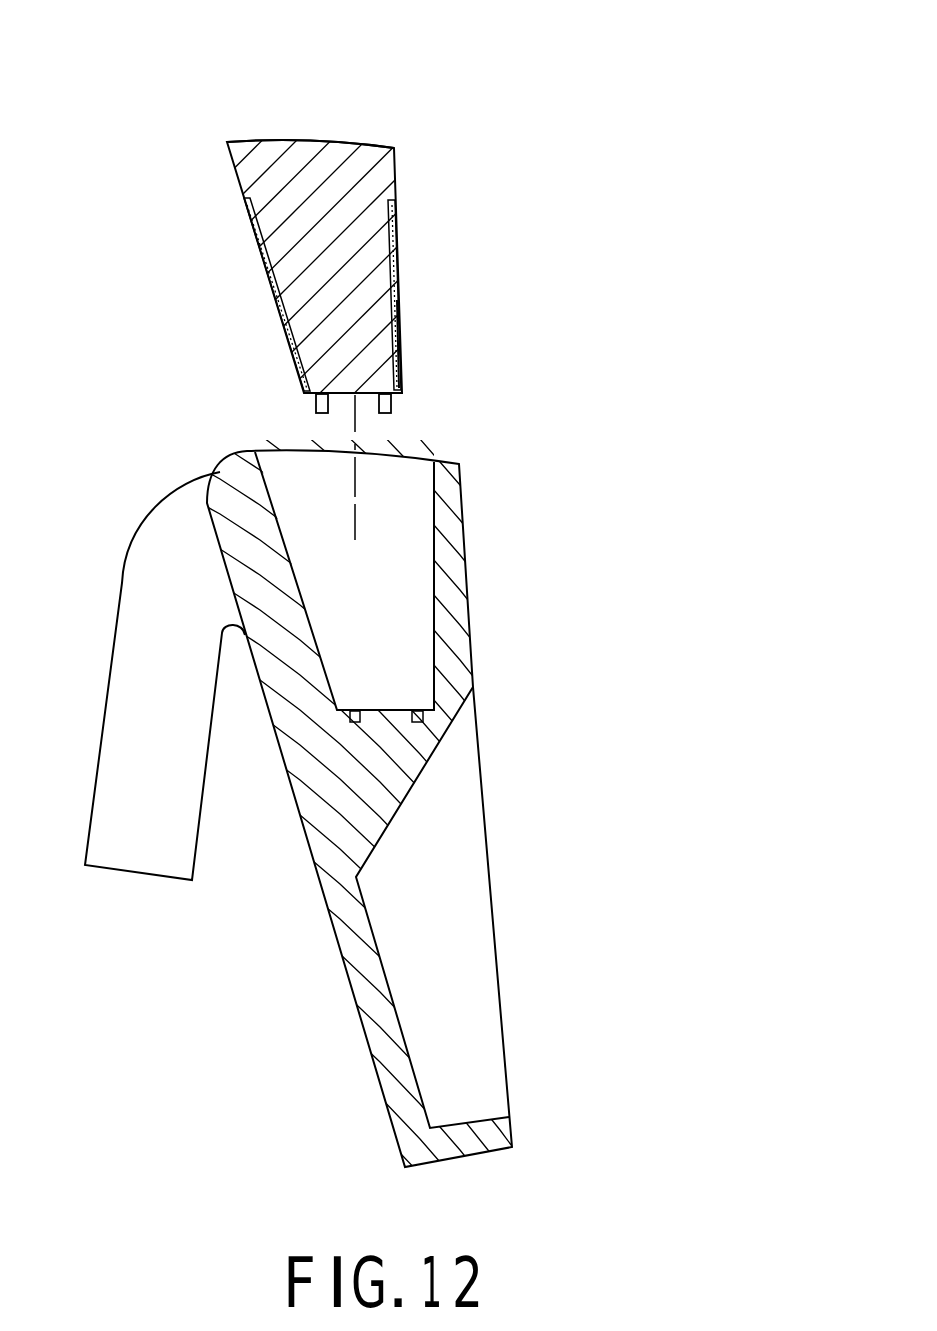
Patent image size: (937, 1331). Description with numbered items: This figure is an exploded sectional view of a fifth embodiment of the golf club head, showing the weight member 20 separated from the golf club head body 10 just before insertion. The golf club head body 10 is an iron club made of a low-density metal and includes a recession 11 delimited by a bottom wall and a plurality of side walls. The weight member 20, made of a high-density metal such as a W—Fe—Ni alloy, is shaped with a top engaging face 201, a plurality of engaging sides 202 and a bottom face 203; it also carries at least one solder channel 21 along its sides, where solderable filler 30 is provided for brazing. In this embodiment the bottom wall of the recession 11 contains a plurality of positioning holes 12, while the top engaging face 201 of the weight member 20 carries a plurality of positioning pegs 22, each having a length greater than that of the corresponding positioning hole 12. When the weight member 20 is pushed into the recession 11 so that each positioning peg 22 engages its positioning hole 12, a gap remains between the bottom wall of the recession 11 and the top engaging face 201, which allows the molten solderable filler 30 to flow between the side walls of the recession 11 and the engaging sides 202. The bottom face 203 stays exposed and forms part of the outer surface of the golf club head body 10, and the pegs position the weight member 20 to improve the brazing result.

The golf club head body 10 is at (458, 662).
The recession 11 is at (392, 603).
The positioning holes 12 is at (428, 715).
The weight member 20 is at (418, 232).
The solder channel 21 is at (397, 268).
The positioning pegs 22 is at (315, 400).
The solderable filler 30 is at (398, 348).
The top engaging face 201 is at (391, 400).
The engaging sides 202 is at (240, 177).
The bottom face 203 is at (292, 138).